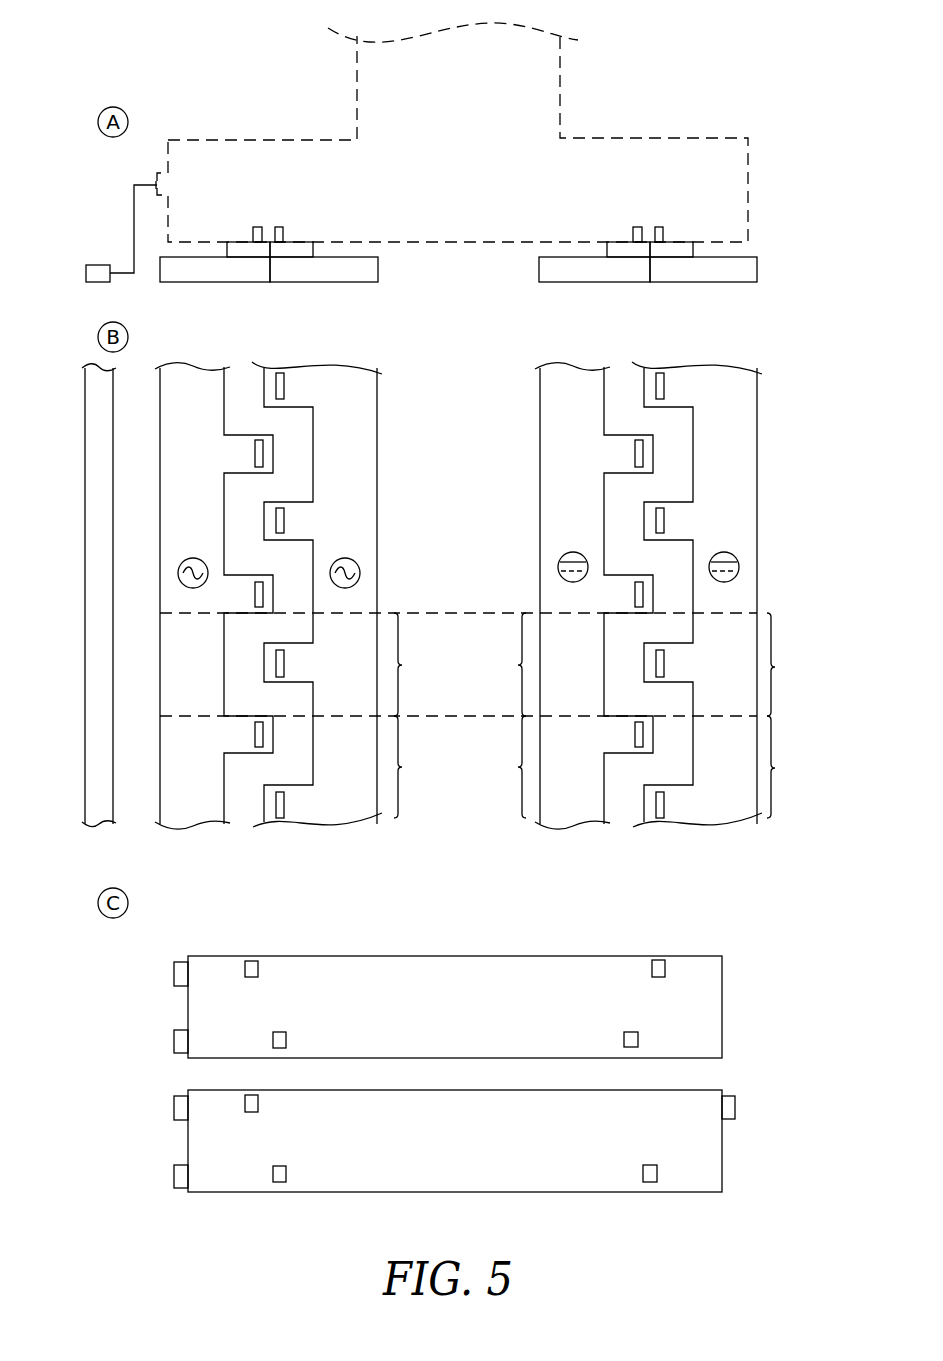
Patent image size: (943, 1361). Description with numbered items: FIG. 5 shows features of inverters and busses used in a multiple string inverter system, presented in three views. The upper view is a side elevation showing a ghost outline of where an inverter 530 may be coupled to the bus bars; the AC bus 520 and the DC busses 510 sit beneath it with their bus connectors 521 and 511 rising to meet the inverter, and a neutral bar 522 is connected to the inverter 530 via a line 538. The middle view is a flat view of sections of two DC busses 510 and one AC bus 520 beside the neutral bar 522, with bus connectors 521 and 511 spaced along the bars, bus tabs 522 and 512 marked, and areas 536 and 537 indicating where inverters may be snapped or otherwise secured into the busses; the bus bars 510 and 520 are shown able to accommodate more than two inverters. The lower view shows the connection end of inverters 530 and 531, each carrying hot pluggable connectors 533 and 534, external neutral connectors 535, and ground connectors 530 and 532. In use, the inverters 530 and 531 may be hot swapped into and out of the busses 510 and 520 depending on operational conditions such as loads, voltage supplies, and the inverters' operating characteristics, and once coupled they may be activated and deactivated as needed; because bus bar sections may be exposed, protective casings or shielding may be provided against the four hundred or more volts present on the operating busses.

The DC bus 510 is at (578, 283).
The bus connector 511 is at (658, 227).
The bus tab 512 is at (618, 575).
The AC bus 520 is at (199, 283).
The bus connector 521 is at (278, 227).
The neutral bar 522 is at (98, 265).
The inverter 530 is at (430, 175).
The inverter 531 is at (722, 1150).
The ground connector 532 is at (735, 1103).
The hot pluggable connector 533 is at (652, 968).
The hot pluggable connector 534 is at (258, 967).
The external neutral connector 535 is at (174, 1108).
The area 536 is at (518, 665).
The area 537 is at (518, 767).
The line 538 is at (134, 203).